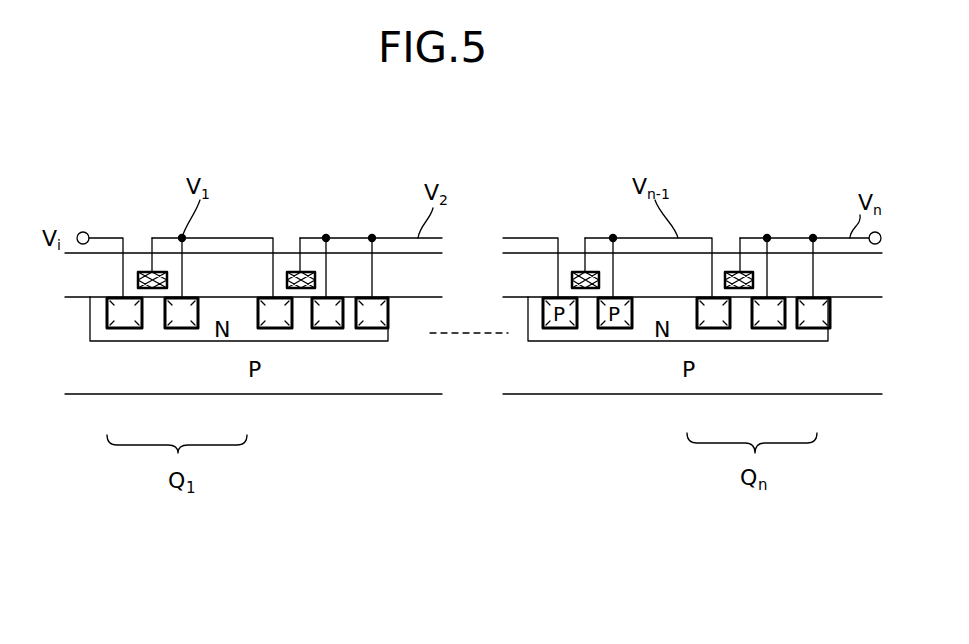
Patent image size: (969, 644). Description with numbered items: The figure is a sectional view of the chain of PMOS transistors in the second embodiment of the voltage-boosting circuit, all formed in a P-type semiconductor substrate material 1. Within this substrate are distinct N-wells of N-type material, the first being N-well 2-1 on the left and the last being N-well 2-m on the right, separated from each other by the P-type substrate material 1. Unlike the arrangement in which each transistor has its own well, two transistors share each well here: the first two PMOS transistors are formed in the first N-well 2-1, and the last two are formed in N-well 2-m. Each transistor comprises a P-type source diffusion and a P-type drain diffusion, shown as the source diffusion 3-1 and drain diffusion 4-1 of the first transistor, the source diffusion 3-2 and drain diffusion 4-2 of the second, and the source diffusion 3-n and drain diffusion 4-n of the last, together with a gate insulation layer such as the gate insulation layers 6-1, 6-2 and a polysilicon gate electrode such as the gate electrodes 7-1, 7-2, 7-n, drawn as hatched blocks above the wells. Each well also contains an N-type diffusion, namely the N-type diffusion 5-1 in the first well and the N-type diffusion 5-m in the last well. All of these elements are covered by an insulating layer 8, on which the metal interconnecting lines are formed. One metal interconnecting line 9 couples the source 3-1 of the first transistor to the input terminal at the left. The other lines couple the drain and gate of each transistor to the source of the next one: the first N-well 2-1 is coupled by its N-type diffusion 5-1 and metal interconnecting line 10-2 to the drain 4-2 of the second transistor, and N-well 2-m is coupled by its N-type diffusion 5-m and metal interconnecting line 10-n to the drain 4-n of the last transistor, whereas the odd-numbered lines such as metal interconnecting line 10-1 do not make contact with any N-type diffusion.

The P-type semiconductor substrate material 1 is at (393, 352).
The N-well 2-1 is at (220, 343).
The N-well 2-m is at (615, 342).
The P-type source diffusion 3-1 is at (128, 328).
The P-type drain diffusion 4-1 is at (178, 328).
The P-type source diffusion 3-2 is at (278, 328).
The P-type drain diffusion 4-2 is at (330, 328).
The P-type source diffusion 3-n is at (713, 328).
The P-type drain diffusion 4-n is at (773, 328).
The N-type diffusion 5-1 is at (388, 317).
The N-type diffusion 5-m is at (830, 315).
The gate insulation layer 6-1 is at (167, 290).
The gate insulation layer 6-2 is at (313, 290).
The polysilicon gate electrode 7-1 is at (147, 272).
The polysilicon gate electrode 7-2 is at (293, 272).
The polysilicon gate electrode 7-n is at (733, 272).
The insulating layer 8 is at (418, 277).
The metal interconnecting line 9 is at (103, 238).
The metal interconnecting line 10-1 is at (248, 238).
The metal interconnecting line 10-2 is at (345, 238).
The metal interconnecting line 10-n is at (830, 238).